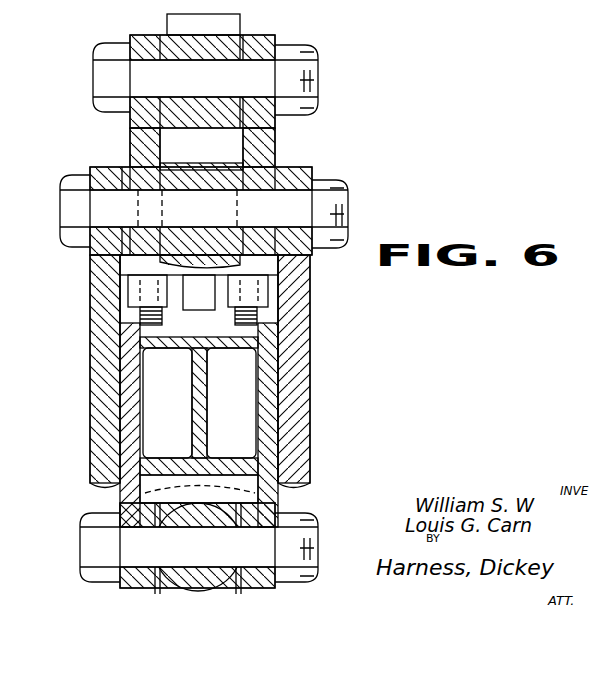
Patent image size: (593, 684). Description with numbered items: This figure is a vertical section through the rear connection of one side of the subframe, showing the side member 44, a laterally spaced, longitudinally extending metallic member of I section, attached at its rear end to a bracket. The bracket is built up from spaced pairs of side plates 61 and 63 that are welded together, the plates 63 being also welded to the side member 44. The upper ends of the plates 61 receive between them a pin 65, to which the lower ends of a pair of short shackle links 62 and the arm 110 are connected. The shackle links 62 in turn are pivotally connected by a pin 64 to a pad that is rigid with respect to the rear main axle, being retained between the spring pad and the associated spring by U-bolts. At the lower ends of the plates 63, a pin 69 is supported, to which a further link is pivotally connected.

The frame member 44 is at (207, 415).
The side plate 61 is at (96, 345).
The shackle link 62 is at (134, 138).
The side plate 63 is at (128, 398).
The pin 64 is at (318, 66).
The pin 65 is at (348, 197).
The pin 69 is at (318, 546).
The arm 110 is at (243, 182).